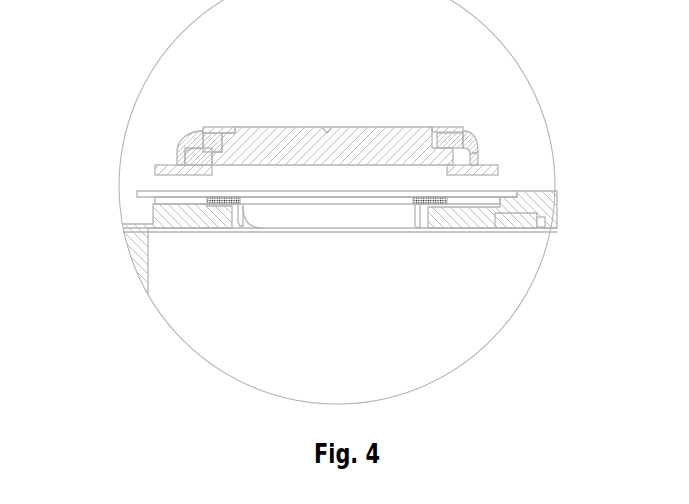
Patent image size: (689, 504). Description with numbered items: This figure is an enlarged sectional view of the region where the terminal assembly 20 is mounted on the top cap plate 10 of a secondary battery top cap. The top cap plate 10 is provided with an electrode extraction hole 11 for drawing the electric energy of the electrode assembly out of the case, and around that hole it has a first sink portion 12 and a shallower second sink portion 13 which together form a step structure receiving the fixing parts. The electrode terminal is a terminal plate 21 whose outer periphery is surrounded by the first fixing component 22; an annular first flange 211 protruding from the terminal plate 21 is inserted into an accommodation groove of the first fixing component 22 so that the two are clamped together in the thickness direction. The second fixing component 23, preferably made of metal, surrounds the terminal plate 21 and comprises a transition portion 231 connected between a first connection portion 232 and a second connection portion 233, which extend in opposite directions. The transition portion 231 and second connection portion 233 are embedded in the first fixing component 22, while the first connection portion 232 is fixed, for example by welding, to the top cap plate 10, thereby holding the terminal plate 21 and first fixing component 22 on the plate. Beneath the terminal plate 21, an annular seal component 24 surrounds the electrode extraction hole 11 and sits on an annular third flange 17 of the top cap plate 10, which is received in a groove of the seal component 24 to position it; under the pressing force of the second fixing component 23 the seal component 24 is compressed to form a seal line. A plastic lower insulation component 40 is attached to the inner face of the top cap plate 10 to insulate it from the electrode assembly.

The top cap plate 10 is at (147, 209).
The electrode extraction hole 11 is at (315, 236).
The first sink portion 12 is at (166, 196).
The second sink portion 13 is at (515, 184).
The third flange 17 is at (239, 207).
The terminal assembly 20 is at (395, 107).
The terminal plate 21 is at (278, 148).
The first flange 211 is at (208, 163).
The first fixing component 22 is at (446, 128).
The second fixing component 23 is at (541, 124).
The transition portion 231 is at (478, 147).
The first connection portion 232 is at (497, 165).
The second connection portion 233 is at (463, 128).
The seal component 24 is at (217, 205).
The lower insulation component 40 is at (450, 230).